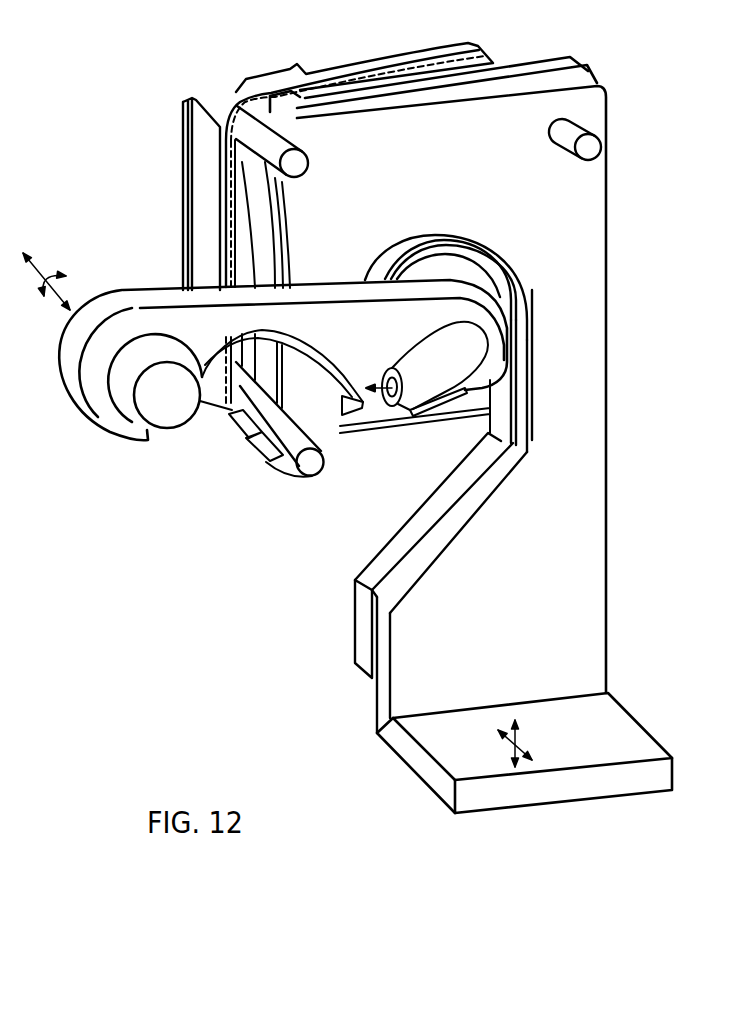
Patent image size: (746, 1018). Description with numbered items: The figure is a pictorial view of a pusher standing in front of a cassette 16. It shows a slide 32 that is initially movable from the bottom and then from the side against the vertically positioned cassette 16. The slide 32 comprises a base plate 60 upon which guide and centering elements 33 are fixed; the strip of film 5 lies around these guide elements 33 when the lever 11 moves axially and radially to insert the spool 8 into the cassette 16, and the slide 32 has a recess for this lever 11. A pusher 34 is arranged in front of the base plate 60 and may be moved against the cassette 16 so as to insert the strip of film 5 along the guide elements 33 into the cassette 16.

The strip of film 5 is at (430, 52).
The spool 8 is at (447, 243).
The lever 11 is at (127, 320).
The cassette 16 is at (180, 157).
The slide 32 is at (330, 604).
The guide and centering elements 33 is at (306, 166).
The pusher 34 is at (360, 653).
The base plate 60 is at (377, 735).